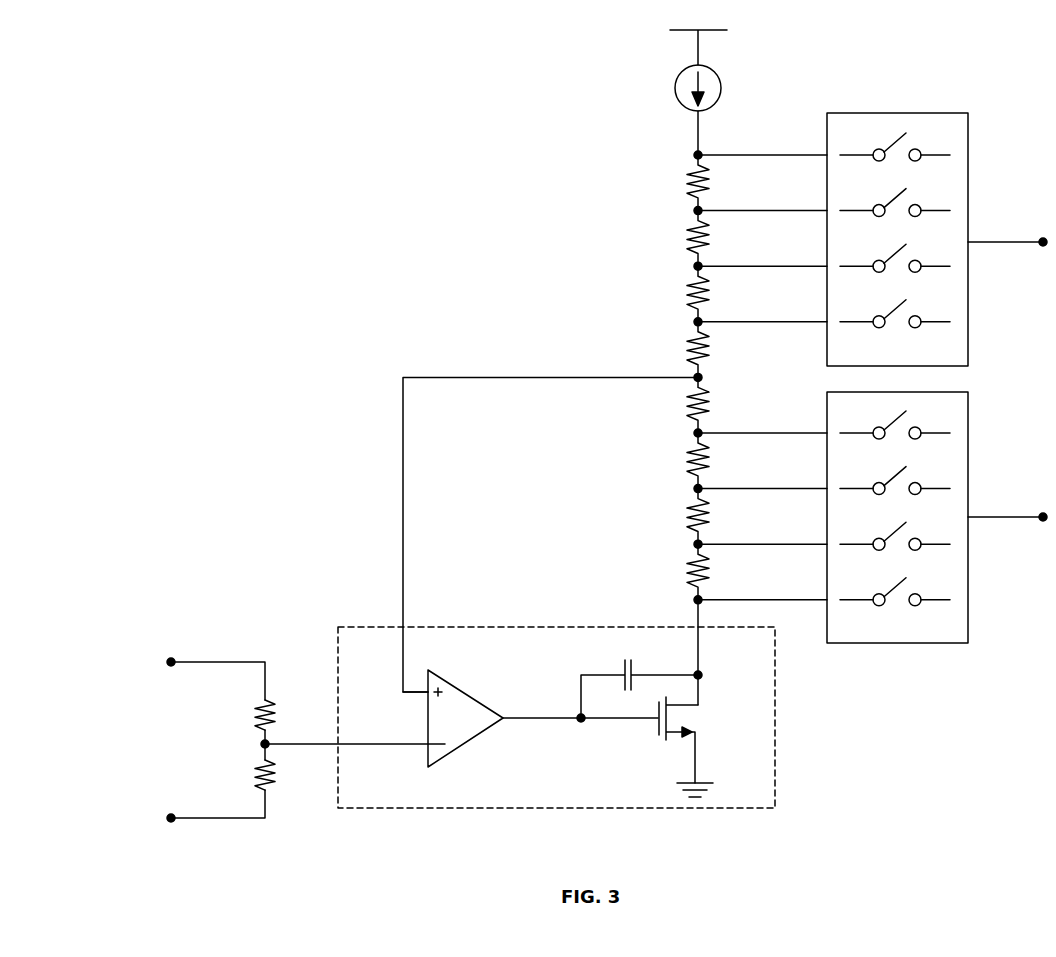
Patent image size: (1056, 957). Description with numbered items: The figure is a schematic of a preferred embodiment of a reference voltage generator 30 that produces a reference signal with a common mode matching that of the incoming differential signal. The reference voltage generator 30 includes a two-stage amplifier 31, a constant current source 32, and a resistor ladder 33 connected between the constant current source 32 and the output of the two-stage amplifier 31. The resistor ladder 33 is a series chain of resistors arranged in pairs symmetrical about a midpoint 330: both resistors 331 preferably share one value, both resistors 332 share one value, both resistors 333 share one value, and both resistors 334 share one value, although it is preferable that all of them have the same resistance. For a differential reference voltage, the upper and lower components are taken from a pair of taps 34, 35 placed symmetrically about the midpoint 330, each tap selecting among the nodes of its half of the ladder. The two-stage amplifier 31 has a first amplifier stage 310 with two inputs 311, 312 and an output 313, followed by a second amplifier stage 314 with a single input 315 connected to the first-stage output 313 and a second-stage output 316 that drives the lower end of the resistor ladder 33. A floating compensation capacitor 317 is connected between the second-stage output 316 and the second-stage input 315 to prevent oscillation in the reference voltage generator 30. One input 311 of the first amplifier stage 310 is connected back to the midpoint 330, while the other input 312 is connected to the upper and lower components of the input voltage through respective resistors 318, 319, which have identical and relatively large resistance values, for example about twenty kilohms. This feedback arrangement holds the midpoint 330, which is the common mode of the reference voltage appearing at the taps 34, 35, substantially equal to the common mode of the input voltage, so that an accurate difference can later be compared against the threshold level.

The reference voltage generator 30 is at (466, 98).
The two-stage amplifier 31 is at (506, 627).
The constant current source 32 is at (675, 96).
The resistor ladder 33 is at (615, 267).
The tap 34 is at (970, 242).
The tap 35 is at (970, 517).
The first amplifier stage 310 is at (485, 697).
The input 311 is at (408, 696).
The input 312 is at (416, 748).
The output 313 is at (515, 716).
The second amplifier stage 314 is at (670, 754).
The input 315 is at (620, 722).
The second-stage output 316 is at (704, 684).
The floating compensation capacitor 317 is at (618, 672).
The resistor 318 is at (258, 713).
The resistor 319 is at (258, 767).
The midpoint 330 is at (706, 377).
The resistor 331 is at (688, 350).
The resistor 332 is at (688, 295).
The resistor 333 is at (688, 239).
The resistor 334 is at (688, 184).